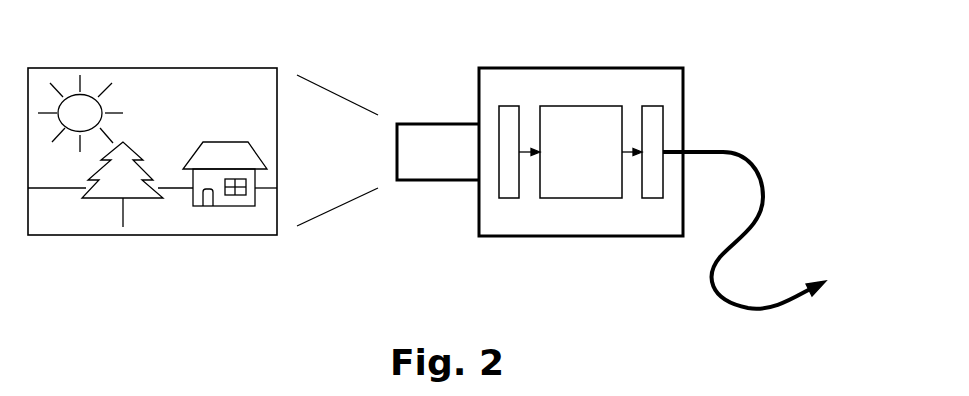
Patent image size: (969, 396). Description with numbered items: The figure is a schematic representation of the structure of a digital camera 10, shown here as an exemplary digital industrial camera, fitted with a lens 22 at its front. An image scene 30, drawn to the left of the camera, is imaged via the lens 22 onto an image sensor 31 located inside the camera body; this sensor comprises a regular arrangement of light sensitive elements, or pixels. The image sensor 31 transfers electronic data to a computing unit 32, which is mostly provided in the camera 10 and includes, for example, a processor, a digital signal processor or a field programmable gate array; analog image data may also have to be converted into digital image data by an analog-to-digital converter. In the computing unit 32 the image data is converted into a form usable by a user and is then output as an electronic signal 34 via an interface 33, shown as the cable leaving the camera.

The digital camera 10 is at (683, 85).
The lens 22 is at (427, 124).
The image scene 30 is at (150, 68).
The image sensor 31 is at (510, 106).
The computing unit 32 is at (580, 106).
The interface 33 is at (650, 106).
The electronic signal 34 is at (765, 197).